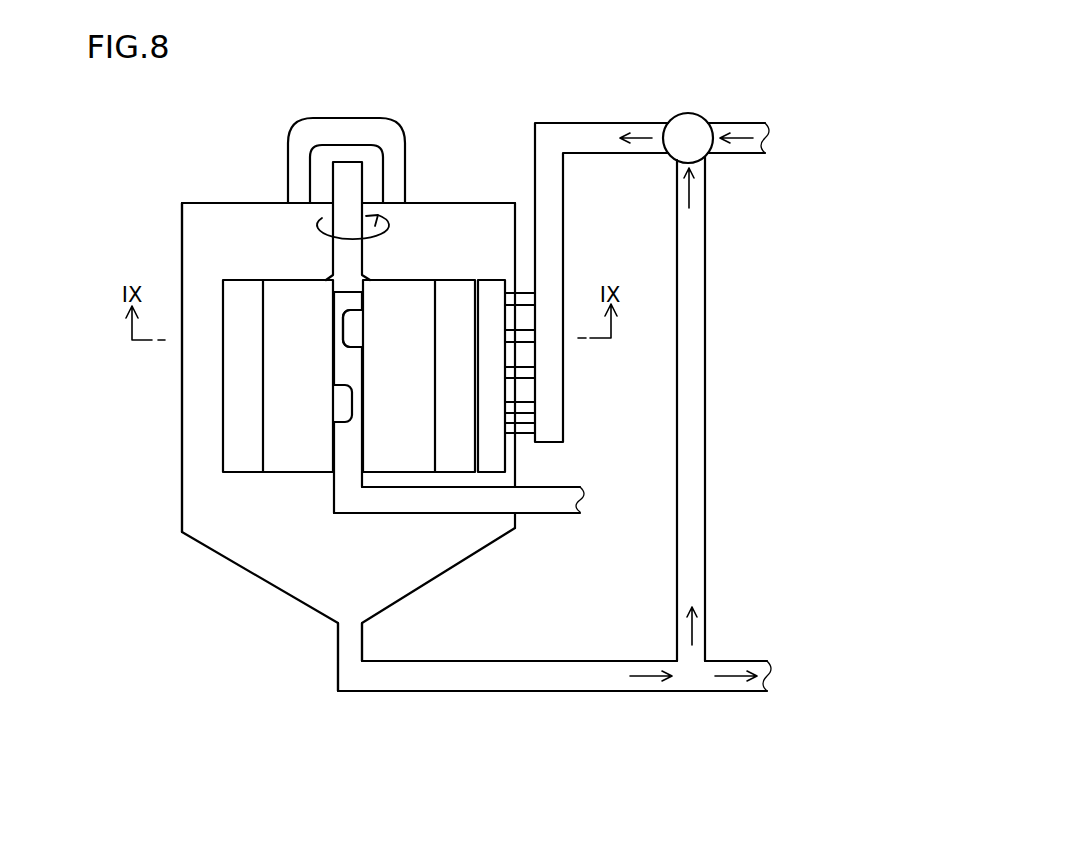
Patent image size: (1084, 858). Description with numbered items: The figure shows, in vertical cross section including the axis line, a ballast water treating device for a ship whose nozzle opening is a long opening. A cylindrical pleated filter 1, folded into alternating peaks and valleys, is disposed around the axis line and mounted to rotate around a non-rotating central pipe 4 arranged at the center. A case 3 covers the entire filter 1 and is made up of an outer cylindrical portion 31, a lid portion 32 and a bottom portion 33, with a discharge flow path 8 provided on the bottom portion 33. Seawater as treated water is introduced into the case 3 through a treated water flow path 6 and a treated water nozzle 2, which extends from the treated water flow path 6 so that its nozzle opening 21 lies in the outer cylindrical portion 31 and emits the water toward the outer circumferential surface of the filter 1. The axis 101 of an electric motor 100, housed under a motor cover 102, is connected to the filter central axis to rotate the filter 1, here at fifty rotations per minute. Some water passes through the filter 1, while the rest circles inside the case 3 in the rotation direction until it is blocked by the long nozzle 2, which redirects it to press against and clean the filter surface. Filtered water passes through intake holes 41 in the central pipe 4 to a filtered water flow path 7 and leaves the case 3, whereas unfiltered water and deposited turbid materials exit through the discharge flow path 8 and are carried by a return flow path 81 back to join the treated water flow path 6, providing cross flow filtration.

The cylindrical filter 1 is at (243, 377).
The treated water nozzle 2 is at (492, 456).
The nozzle opening 21 is at (478, 442).
The case 3 is at (182, 450).
The outer cylindrical portion 31 is at (183, 512).
The lid portion 32 is at (203, 200).
The bottom portion 33 is at (256, 580).
The central pipe 4 is at (362, 302).
The intake holes 41 is at (345, 325).
The treated water flow path 6 is at (565, 364).
The filtered water flow path 7 is at (549, 513).
The discharge flow path 8 is at (338, 650).
The return flow path 81 is at (707, 537).
The electric motor 100 is at (370, 155).
The axis 101 is at (345, 185).
The motor cover 102 is at (349, 113).